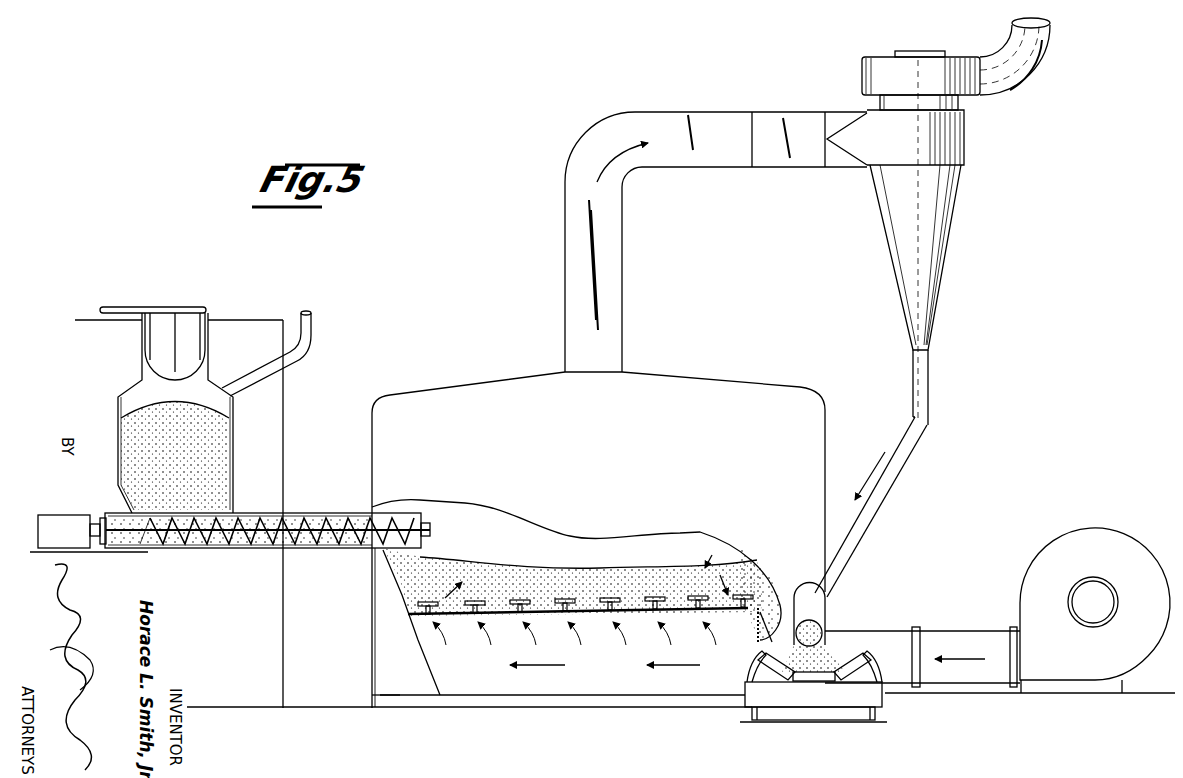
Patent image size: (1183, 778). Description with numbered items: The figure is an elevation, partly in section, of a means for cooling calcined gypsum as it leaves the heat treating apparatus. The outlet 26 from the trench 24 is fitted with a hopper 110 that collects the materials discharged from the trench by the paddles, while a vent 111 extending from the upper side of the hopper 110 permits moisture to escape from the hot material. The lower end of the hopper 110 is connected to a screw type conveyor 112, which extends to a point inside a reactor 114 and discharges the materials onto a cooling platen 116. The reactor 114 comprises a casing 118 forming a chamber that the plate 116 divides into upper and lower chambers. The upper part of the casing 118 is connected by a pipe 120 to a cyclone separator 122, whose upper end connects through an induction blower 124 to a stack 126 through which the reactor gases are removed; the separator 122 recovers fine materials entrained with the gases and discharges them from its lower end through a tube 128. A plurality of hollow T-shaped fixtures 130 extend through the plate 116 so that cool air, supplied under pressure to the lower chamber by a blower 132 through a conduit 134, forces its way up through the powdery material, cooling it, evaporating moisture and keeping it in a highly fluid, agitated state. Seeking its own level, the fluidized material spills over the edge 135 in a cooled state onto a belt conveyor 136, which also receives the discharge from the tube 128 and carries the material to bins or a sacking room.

The trench 24 is at (141, 339).
The outlet 26 is at (141, 371).
The hopper 110 is at (118, 440).
The vent 111 is at (304, 342).
The screw type conveyor 112 is at (290, 513).
The reactor 114 is at (476, 398).
The cooling platen 116 is at (486, 618).
The casing 118 is at (373, 652).
The pipe 120 is at (606, 255).
The cyclone separator 122 is at (932, 291).
The induction blower 124 is at (863, 75).
The stack 126 is at (1042, 50).
The tube 128 is at (882, 494).
The T-shaped fixtures 130 is at (427, 618).
The blower 132 is at (1022, 566).
The conduit 134 is at (899, 637).
The edge 135 is at (752, 628).
The belt conveyor 136 is at (850, 653).